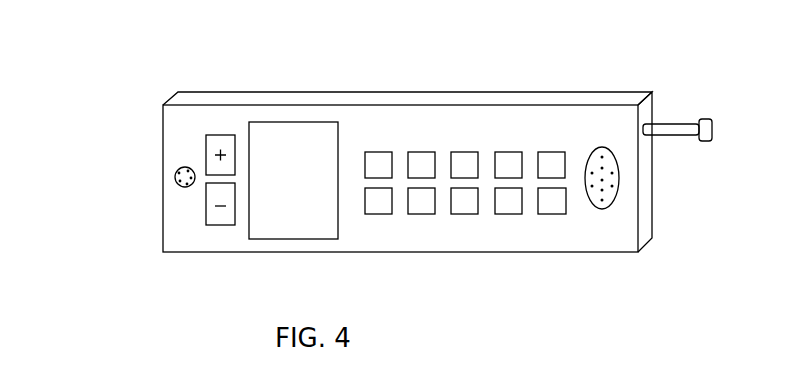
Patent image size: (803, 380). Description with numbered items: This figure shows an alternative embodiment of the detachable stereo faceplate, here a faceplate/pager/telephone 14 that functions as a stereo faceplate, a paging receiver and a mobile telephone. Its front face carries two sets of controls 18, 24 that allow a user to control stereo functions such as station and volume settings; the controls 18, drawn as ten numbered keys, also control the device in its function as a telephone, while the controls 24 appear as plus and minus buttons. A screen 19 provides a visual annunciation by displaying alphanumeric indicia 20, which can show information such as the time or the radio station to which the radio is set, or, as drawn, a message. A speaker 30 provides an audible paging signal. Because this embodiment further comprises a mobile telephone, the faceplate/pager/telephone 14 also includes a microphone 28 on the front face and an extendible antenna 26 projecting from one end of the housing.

The faceplate/pager/telephone 14 is at (166, 70).
The controls 18 is at (465, 213).
The screen 19 is at (327, 237).
The alphanumeric indicia 20 is at (282, 143).
The controls 24 is at (222, 225).
The extendible antenna 26 is at (688, 122).
The microphone 28 is at (173, 177).
The speaker 30 is at (602, 210).